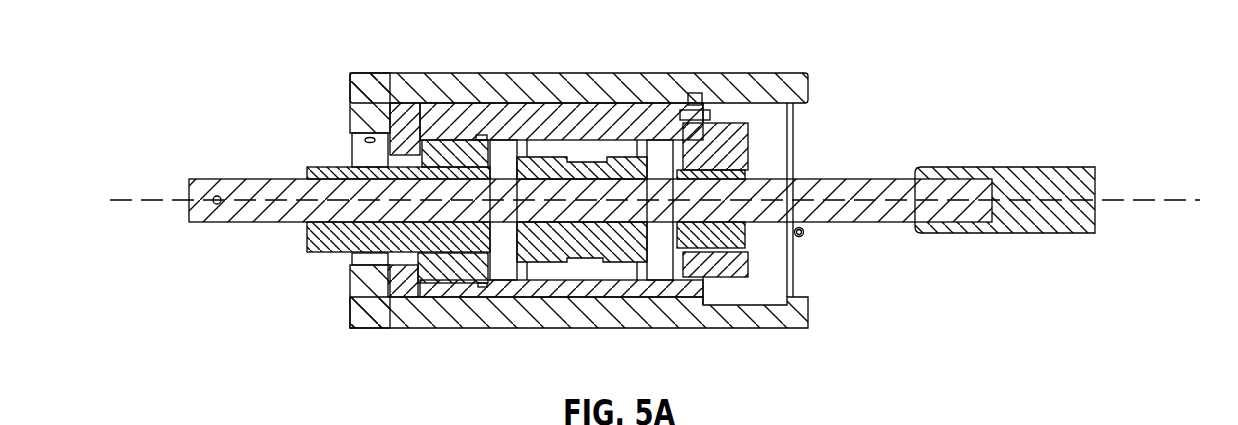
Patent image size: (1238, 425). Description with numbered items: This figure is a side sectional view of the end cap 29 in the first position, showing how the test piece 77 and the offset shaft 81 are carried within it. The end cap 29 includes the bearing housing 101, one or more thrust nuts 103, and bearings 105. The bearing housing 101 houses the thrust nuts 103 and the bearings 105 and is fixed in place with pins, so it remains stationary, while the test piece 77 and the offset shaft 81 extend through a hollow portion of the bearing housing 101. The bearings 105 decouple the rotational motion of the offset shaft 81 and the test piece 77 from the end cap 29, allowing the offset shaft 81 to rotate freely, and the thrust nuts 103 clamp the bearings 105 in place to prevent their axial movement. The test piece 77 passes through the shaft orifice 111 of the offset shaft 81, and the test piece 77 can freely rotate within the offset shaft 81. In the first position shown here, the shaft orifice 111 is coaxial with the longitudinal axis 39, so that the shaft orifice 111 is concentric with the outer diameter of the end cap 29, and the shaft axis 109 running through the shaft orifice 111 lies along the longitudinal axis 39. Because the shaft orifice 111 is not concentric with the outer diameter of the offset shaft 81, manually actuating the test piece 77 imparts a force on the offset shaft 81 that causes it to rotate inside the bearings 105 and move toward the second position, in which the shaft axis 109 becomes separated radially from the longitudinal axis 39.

The end cap 29 is at (798, 88).
The longitudinal axis 39 is at (132, 200).
The test piece 77 is at (875, 225).
The offset shaft 81 is at (632, 238).
The bearing housing 101 is at (510, 288).
The thrust nut 103 is at (465, 148).
The bearing 105 is at (505, 143).
The shaft axis 109 is at (1137, 200).
The shaft orifice 111 is at (308, 222).